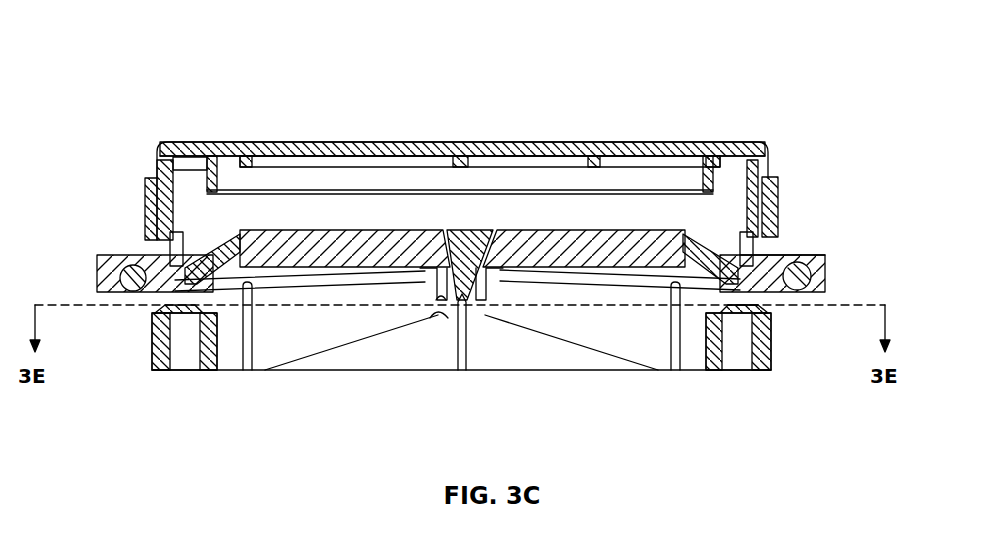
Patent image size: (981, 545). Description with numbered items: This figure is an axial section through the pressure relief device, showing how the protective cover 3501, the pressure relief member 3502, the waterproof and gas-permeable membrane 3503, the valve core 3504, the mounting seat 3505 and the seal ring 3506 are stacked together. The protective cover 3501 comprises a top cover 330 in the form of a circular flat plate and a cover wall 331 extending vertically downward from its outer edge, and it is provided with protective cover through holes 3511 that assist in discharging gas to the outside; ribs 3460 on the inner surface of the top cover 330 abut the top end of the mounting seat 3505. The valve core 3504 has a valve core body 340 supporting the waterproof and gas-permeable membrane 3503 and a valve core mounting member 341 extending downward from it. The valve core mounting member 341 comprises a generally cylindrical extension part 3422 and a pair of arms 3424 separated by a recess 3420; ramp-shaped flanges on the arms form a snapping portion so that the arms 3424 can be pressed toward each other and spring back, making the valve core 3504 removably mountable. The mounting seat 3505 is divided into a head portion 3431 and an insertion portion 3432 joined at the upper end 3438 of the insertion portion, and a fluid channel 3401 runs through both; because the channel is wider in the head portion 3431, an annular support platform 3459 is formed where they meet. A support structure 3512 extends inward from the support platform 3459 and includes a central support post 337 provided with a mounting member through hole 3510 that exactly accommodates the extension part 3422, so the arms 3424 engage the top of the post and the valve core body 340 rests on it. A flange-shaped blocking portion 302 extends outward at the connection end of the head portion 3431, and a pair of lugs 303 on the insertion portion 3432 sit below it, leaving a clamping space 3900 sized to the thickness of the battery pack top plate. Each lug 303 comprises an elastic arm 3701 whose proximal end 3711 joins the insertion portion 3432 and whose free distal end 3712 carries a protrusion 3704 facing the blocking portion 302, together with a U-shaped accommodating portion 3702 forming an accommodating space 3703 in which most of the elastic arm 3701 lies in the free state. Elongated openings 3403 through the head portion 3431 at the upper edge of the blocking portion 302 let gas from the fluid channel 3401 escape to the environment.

The blocking portion 302 is at (817, 255).
The lugs 303 is at (167, 377).
The top cover 330 is at (440, 145).
The cover wall 331 is at (160, 180).
The central support post 337 is at (490, 318).
The valve core body 340 is at (295, 283).
The valve core mounting member 341 is at (437, 297).
The fluid channel 3401 is at (572, 372).
The openings 3403 is at (168, 250).
The recess 3420 is at (455, 372).
The extension part 3422 is at (495, 308).
The arms 3424 is at (447, 305).
The head portion 3431 is at (148, 212).
The insertion portion 3432 is at (706, 372).
The upper end of the insertion portion 3438 is at (692, 348).
The support platform 3459 is at (192, 262).
The ribs 3460 is at (215, 126).
The protective cover 3501 is at (525, 146).
The pressure relief member 3502 is at (697, 250).
The waterproof and gas-permeable membrane 3503 is at (348, 232).
The valve core 3504 is at (618, 268).
The mounting seat 3505 is at (770, 168).
The seal ring 3506 is at (805, 285).
The mounting member through hole 3510 is at (436, 316).
The protective cover through holes 3511 is at (290, 145).
The support structure 3512 is at (356, 372).
The elastic arm 3701 is at (160, 338).
The accommodating portion 3702 is at (775, 372).
The accommodating space 3703 is at (205, 350).
The protrusion 3704 is at (162, 312).
The proximal end of the elastic arm 3711 is at (740, 372).
The distal end of the elastic arm 3712 is at (760, 313).
The clamping space 3900 is at (767, 305).